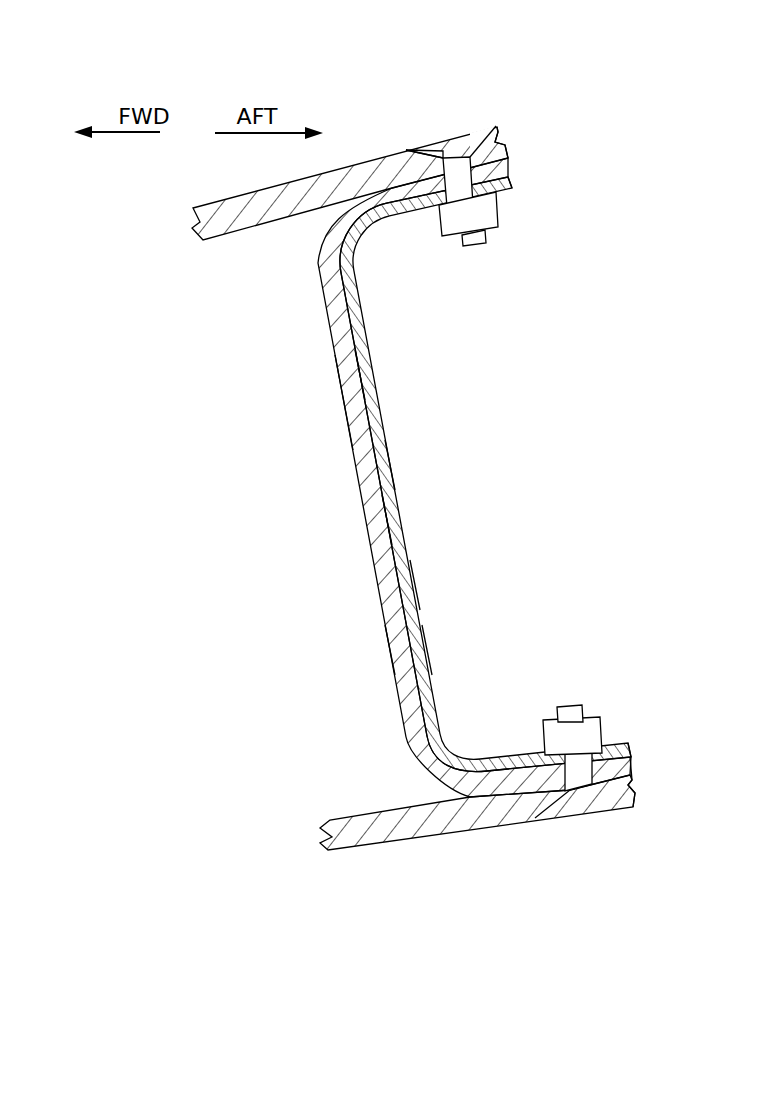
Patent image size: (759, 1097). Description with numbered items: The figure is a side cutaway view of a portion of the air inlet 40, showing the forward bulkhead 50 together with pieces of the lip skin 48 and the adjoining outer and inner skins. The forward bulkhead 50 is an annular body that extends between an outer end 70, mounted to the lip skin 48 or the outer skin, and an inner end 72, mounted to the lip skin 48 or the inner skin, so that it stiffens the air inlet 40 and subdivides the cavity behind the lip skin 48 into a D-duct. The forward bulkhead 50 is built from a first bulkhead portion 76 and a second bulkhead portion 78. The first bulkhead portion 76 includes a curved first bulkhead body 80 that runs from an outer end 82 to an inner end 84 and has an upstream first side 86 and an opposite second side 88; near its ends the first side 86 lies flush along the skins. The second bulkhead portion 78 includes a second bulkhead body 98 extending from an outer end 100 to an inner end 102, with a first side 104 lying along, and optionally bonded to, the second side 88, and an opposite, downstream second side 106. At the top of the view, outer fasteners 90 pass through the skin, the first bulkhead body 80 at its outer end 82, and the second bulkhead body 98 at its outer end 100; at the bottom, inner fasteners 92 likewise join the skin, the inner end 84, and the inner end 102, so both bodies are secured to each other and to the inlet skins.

The air inlet 40 is at (655, 121).
The lip skin 48 is at (370, 165).
The forward bulkhead 50 is at (432, 477).
The outer end 70 is at (518, 187).
The inner end 72 is at (642, 732).
The first bulkhead portion 76 is at (353, 429).
The second bulkhead portion 78 is at (388, 467).
The first bulkhead body 80 is at (349, 399).
The outer end 82 is at (523, 146).
The inner end 84 is at (652, 770).
The first side 86 is at (357, 503).
The second side 88 is at (387, 517).
The outer fasteners 90 is at (497, 230).
The inner fasteners 92 is at (592, 718).
The second bulkhead body 98 is at (403, 583).
The outer end 100 is at (530, 182).
The inner end 102 is at (655, 742).
The first side 104 is at (397, 658).
The second side 106 is at (430, 650).